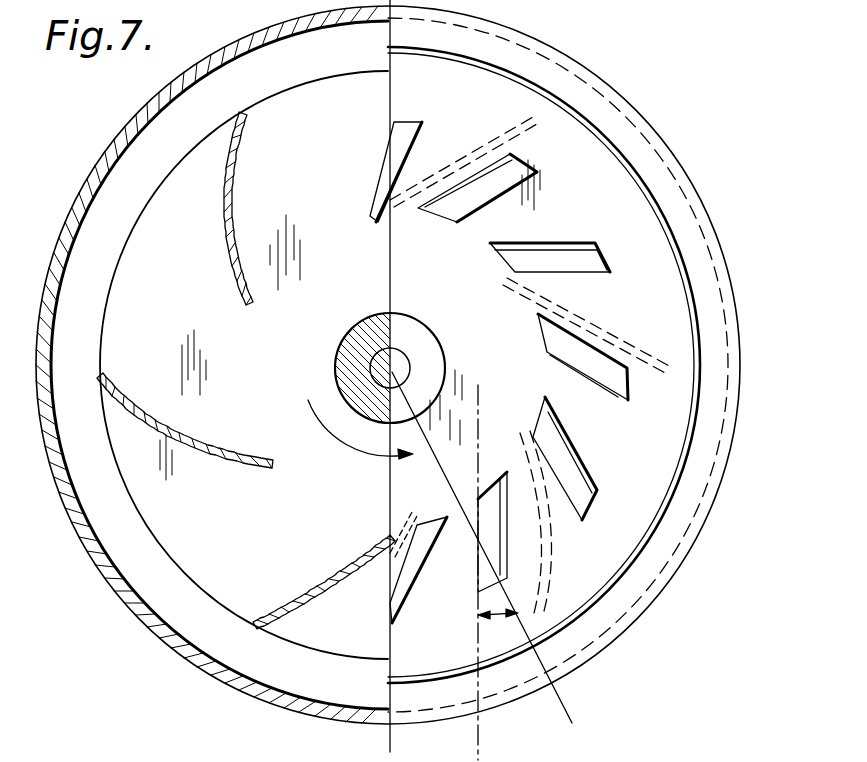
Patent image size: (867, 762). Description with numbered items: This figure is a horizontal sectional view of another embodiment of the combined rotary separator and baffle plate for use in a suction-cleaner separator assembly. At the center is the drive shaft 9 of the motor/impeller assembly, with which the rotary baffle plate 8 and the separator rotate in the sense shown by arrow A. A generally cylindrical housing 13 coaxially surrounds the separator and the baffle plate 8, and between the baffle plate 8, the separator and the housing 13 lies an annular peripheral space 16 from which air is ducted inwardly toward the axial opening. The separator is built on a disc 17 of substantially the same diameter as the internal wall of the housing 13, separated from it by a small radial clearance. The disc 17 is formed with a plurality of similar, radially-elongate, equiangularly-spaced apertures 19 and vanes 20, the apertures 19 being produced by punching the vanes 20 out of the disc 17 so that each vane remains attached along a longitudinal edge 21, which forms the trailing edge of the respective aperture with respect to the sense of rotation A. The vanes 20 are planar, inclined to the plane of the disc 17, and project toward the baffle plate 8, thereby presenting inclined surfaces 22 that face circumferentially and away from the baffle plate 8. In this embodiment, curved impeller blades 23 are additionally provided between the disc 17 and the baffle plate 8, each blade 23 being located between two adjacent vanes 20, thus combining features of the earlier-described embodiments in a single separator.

The rotary baffle plate 8 is at (185, 555).
The drive shaft 9 is at (370, 368).
The housing 13 is at (52, 247).
The annular peripheral space 16 is at (140, 211).
The disc 17 is at (642, 515).
The apertures 19 is at (466, 186).
The vanes 20 is at (566, 258).
The longitudinal edge 21 is at (123, 525).
The inclined surfaces 22 is at (535, 338).
The impeller blades 23 is at (243, 290).
The sense of rotation A is at (360, 439).